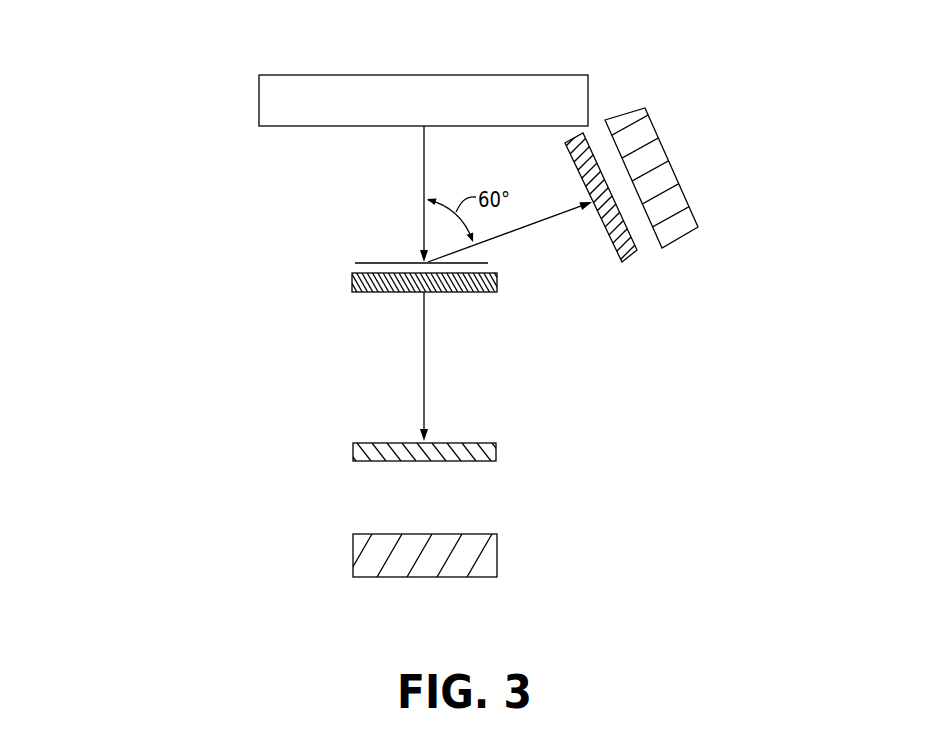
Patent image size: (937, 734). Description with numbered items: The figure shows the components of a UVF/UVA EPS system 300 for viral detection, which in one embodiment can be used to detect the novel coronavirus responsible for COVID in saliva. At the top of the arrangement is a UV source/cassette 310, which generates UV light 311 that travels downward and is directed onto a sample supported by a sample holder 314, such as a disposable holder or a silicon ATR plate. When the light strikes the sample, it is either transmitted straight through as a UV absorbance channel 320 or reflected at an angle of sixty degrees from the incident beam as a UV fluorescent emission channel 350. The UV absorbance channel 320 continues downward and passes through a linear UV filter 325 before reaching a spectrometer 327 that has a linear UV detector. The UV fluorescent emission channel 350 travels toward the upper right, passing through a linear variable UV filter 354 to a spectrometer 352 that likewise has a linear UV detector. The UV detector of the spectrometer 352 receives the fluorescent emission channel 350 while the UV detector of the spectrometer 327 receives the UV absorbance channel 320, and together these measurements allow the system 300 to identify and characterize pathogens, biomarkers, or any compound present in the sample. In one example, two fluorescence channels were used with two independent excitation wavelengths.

The UVF/UVA EPS system 300 is at (123, 36).
The UV source/cassette 310 is at (315, 75).
The UV light 311 is at (422, 165).
The sample holder 314 is at (341, 284).
The UV absorbance channel 320 is at (425, 358).
The linear UV filter 325 is at (512, 452).
The spectrometer 327 is at (511, 553).
The UV fluorescent emission channel 350 is at (495, 238).
The spectrometer 352 is at (695, 199).
The linear variable UV filter 354 is at (635, 269).